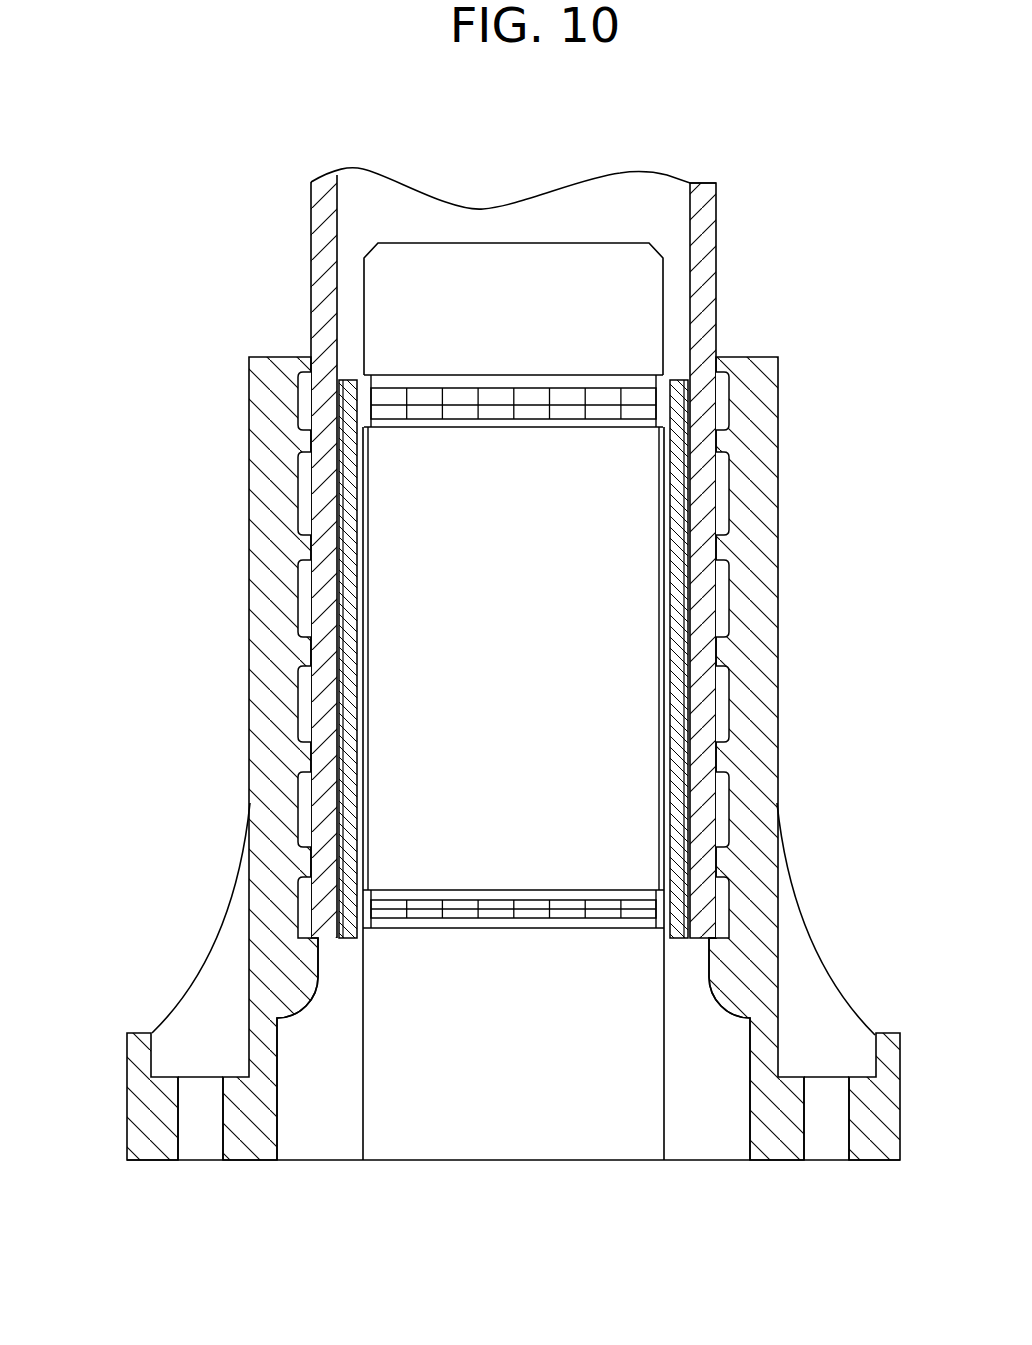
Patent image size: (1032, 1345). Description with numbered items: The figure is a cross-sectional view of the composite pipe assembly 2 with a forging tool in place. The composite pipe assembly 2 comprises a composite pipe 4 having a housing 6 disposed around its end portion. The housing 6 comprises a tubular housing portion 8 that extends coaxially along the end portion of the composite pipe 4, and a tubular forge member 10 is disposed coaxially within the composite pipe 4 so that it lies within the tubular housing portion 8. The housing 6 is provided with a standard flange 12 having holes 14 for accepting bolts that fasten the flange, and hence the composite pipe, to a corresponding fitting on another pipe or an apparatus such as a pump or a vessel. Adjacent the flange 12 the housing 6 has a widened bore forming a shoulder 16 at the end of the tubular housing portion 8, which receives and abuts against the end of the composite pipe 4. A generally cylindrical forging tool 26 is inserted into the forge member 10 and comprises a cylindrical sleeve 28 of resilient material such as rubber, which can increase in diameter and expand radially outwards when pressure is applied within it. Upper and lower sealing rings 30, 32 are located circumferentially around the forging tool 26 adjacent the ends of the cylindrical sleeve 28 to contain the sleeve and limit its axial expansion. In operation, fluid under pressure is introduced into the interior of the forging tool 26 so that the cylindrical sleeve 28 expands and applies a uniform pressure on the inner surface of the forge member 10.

The composite pipe assembly 2 is at (813, 218).
The composite pipe 4 is at (318, 283).
The housing 6 is at (176, 838).
The tubular housing portion 8 is at (750, 692).
The tubular forge member 10 is at (678, 521).
The flange 12 is at (151, 1033).
The holes 14 is at (178, 1128).
The shoulder 16 is at (732, 960).
The forging tool 26 is at (396, 593).
The cylindrical sleeve 28 is at (413, 714).
The upper sealing ring 30 is at (633, 398).
The lower sealing ring 32 is at (385, 910).